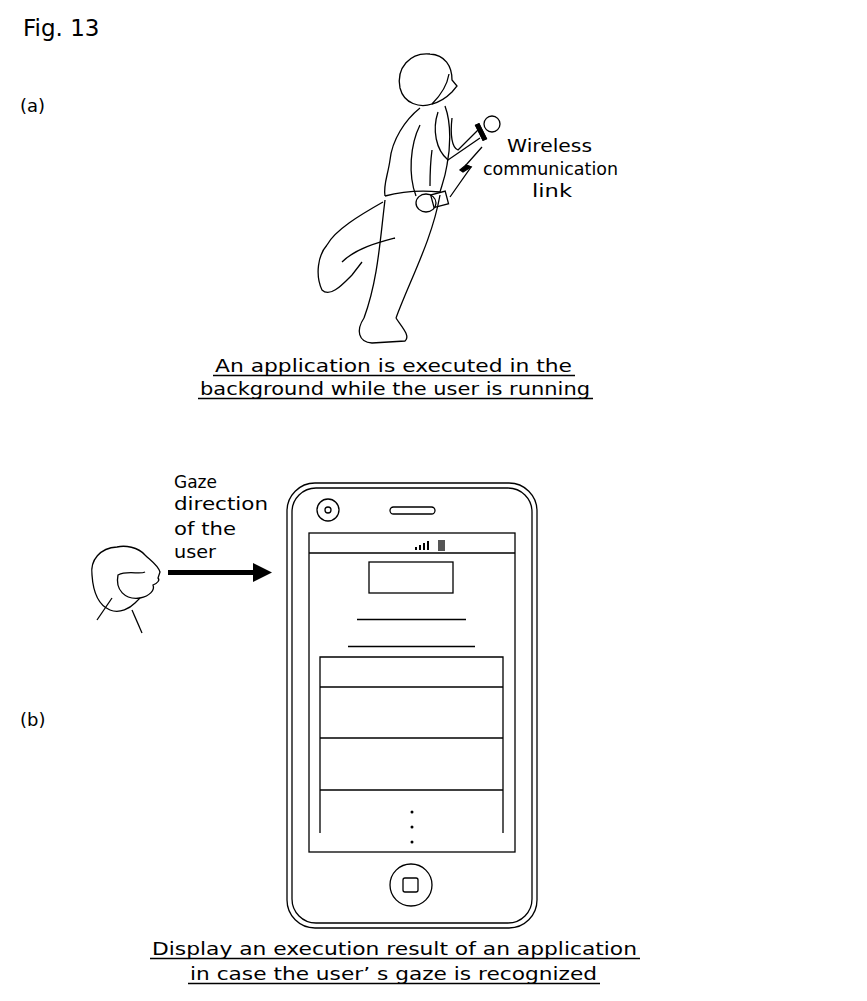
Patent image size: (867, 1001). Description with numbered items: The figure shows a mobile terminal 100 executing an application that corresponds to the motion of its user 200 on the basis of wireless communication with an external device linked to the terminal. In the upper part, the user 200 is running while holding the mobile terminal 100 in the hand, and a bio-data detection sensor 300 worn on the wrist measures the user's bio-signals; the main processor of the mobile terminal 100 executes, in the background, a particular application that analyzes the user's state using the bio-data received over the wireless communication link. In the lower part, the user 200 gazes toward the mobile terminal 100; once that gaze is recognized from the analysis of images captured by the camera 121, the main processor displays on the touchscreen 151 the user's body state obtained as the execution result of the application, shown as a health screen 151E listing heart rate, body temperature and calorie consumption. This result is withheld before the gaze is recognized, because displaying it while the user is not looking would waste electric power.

The mobile terminal 100 is at (442, 206).
The camera 121 is at (329, 498).
The touchscreen 151 is at (515, 563).
The execution result screen information 151E is at (503, 677).
The user 200 is at (388, 140).
The bio-data detection sensor 300 is at (480, 122).